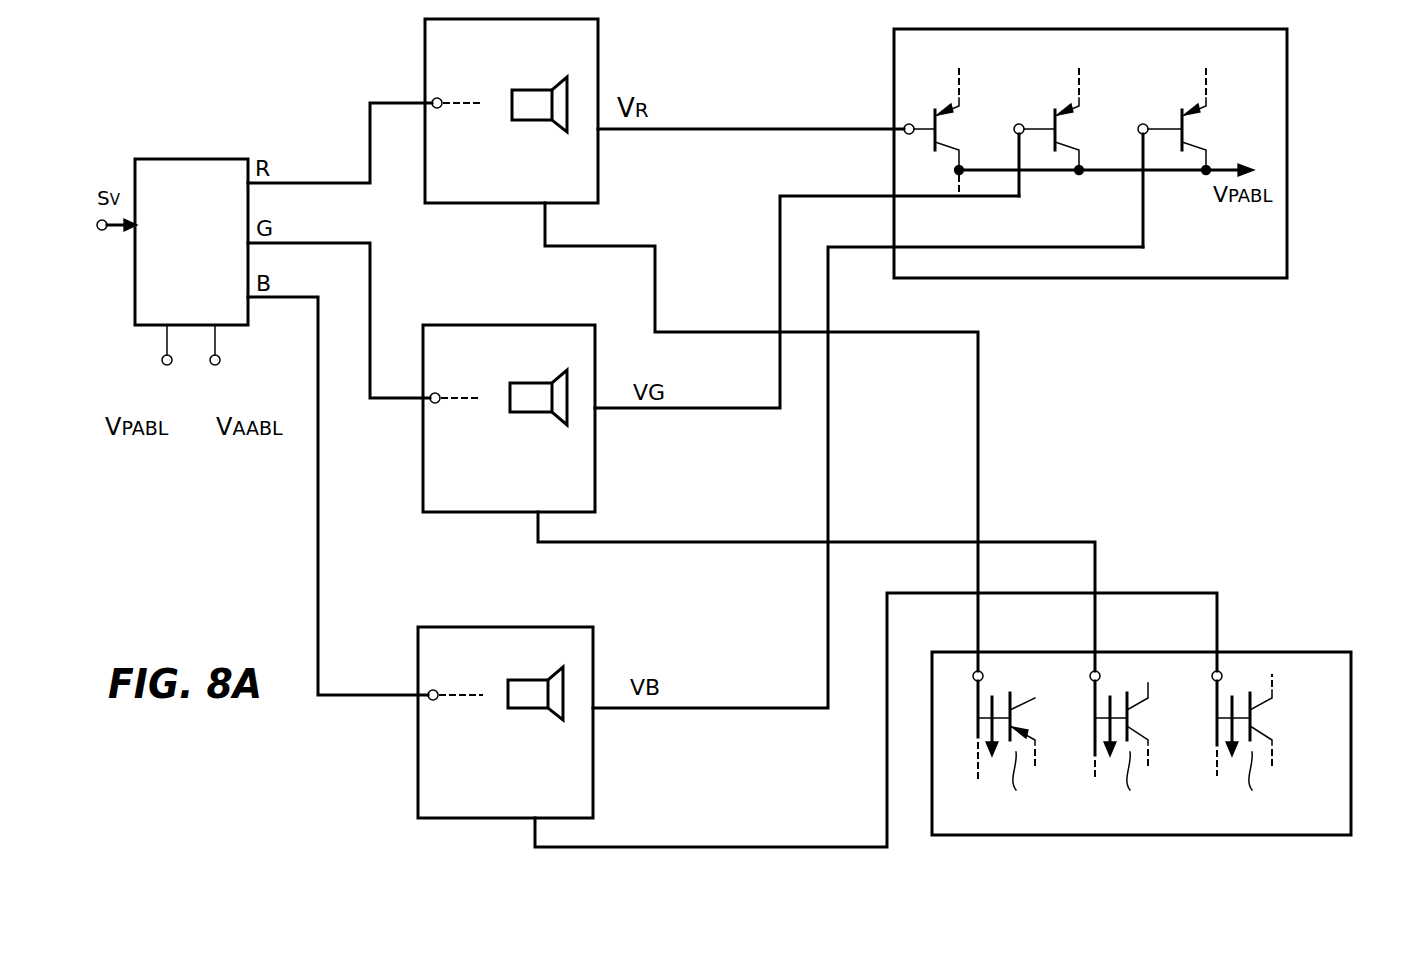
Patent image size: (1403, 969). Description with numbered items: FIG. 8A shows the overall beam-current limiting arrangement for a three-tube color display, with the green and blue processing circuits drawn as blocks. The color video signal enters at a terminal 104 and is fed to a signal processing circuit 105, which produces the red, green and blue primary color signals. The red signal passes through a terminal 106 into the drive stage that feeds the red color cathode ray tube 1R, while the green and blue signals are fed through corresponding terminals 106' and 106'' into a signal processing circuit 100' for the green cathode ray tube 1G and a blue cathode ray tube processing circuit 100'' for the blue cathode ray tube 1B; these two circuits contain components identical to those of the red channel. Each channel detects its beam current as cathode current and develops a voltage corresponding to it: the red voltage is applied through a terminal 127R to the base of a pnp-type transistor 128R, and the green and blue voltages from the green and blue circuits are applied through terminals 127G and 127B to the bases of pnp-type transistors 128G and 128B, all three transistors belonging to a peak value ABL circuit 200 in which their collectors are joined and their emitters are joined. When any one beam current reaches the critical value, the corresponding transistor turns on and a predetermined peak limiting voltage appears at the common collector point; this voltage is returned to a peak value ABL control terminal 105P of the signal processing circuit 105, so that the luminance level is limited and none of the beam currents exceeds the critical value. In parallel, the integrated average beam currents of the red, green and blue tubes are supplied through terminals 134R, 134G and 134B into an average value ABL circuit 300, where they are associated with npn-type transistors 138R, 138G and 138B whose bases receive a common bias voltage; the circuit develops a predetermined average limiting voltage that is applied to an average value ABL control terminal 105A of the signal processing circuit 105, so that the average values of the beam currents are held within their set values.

The terminal 104 is at (100, 231).
The signal processing circuit 105 is at (205, 157).
The peak value ABL control terminal 105P is at (167, 365).
The average value ABL control terminal 105A is at (215, 365).
The terminal 106 is at (424, 87).
The green signal input terminal 106' is at (429, 382).
The blue signal input terminal 106'' is at (414, 681).
The signal processing circuit for the green cathode ray tube 100' is at (509, 395).
The blue cathode ray tube processing circuit 100'' is at (505, 700).
The red color cathode ray tube 1R is at (530, 92).
The green color cathode ray tube 1G is at (532, 384).
The blue color cathode ray tube 1B is at (530, 682).
The terminal 127R is at (909, 124).
The terminal 127G is at (1020, 124).
The terminal 127B is at (1144, 124).
The pnp-type transistor 128R is at (945, 153).
The pnp-type transistor 128G is at (1062, 155).
The pnp-type transistor 128B is at (1190, 155).
The peak value ABL circuit 200 is at (1243, 279).
The terminal 134R is at (981, 671).
The terminal 134G is at (1098, 671).
The terminal 134B is at (1220, 671).
The npn-type transistor 138R is at (1021, 785).
The npn-type transistor 138G is at (1138, 785).
The npn-type transistor 138B is at (1258, 785).
The average value ABL circuit 300 is at (1351, 718).